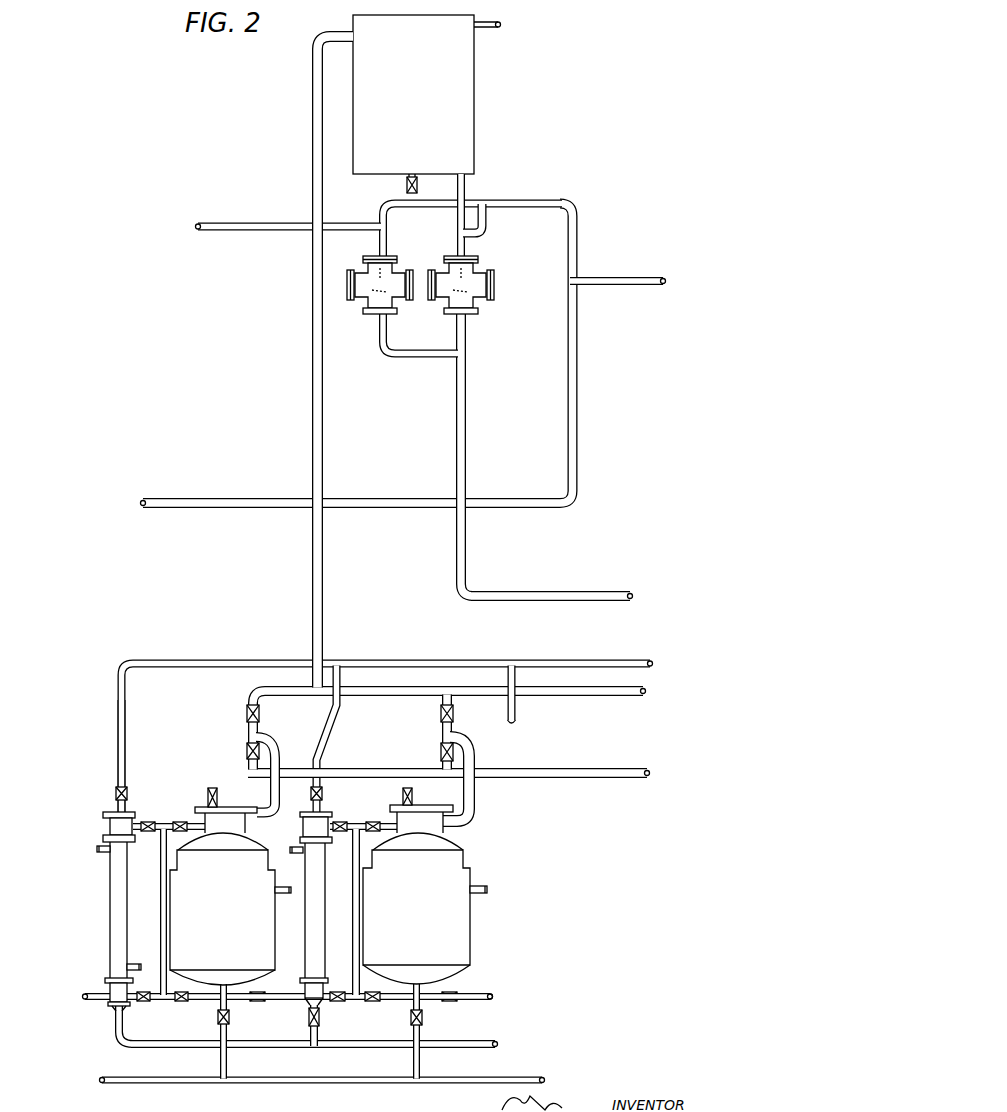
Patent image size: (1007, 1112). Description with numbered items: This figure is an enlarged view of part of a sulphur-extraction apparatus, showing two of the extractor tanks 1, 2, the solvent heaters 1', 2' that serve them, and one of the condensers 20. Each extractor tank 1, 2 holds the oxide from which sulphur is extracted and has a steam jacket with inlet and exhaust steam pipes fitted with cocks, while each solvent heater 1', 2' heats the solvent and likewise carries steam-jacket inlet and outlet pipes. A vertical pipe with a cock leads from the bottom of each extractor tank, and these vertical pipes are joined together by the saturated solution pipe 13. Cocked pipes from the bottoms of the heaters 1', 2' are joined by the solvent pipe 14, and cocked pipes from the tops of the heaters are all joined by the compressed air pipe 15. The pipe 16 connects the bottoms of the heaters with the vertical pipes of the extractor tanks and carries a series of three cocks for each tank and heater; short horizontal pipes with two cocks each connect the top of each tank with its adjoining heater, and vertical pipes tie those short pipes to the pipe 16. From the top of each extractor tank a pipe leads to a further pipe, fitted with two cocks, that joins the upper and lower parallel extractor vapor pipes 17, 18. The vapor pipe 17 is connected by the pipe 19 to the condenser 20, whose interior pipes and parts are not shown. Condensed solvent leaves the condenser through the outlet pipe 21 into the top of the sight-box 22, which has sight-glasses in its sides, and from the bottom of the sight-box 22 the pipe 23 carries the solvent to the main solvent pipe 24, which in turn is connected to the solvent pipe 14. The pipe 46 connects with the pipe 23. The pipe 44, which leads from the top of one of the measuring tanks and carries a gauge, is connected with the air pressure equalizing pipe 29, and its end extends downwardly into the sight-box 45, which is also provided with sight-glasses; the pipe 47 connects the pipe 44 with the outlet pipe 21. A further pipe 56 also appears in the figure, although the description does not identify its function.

The condenser 20 is at (427, 104).
The pipe 19 is at (311, 413).
The branch pipe 56 is at (238, 222).
The outlet pipe 21 is at (457, 225).
The pipe 47 is at (486, 238).
The pipe 44 is at (578, 243).
The air pressure equalizing pipe 29 is at (660, 288).
The sight-box 45 is at (370, 309).
The sight-box 22 is at (479, 297).
The pipe 46 is at (405, 360).
The pipe 23 is at (467, 440).
The main solvent pipe 24 is at (633, 596).
The compressed air pipe 15 is at (431, 661).
The upper extractor vapor pipe 17 is at (647, 693).
The lower extractor vapor pipe 18 is at (651, 771).
The solvent heater 1' is at (105, 911).
The solvent heater 2' is at (322, 908).
The extractor tank 1 is at (222, 896).
The extractor tank 2 is at (416, 894).
The pipe 16 is at (493, 994).
The solvent pipe 14 is at (497, 1041).
The saturated solution pipe 13 is at (533, 1074).